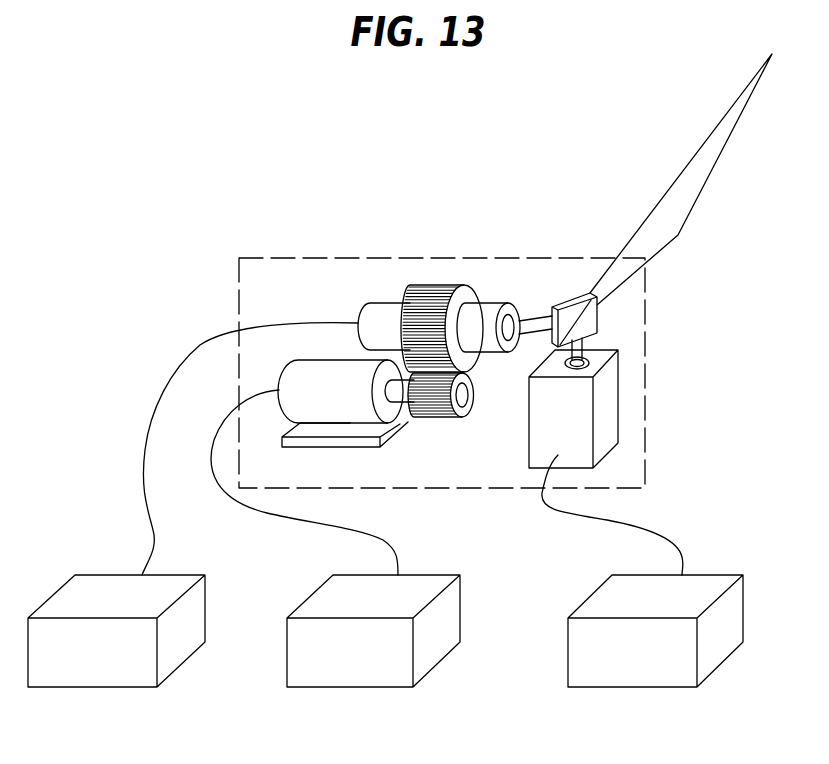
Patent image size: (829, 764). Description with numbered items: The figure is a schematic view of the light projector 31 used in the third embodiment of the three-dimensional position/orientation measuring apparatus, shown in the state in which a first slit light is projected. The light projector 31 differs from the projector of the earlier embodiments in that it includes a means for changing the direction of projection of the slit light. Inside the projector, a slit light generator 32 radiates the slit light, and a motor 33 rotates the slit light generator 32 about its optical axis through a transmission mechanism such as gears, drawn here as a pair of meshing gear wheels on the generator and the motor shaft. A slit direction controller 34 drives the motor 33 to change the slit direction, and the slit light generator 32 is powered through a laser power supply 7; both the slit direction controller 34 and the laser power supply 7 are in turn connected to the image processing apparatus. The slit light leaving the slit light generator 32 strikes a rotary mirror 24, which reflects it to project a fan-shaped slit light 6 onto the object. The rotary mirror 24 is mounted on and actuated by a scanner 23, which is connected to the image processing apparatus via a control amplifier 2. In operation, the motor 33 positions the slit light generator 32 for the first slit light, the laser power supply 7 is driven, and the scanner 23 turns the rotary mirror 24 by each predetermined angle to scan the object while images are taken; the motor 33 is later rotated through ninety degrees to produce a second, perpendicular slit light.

The control amplifier 2 is at (640, 677).
The light beam 6 is at (727, 143).
The laser power supply 7 is at (108, 675).
The scanner 23 is at (615, 418).
The rotary mirror 24 is at (593, 327).
The light projector 31 is at (645, 472).
The slit light generator 32 is at (487, 313).
The motor 33 is at (362, 407).
The slit direction controller 34 is at (360, 677).